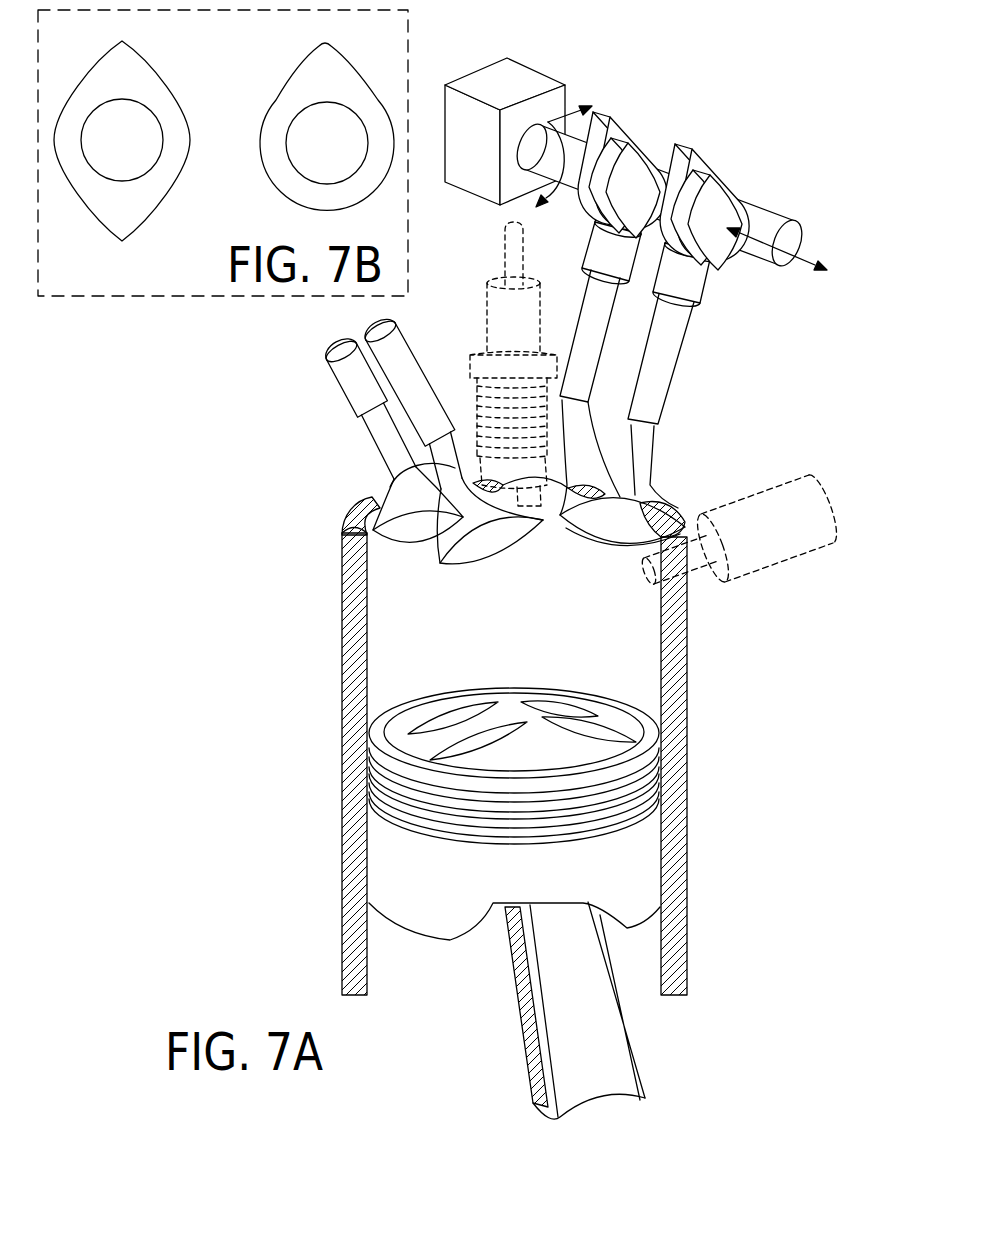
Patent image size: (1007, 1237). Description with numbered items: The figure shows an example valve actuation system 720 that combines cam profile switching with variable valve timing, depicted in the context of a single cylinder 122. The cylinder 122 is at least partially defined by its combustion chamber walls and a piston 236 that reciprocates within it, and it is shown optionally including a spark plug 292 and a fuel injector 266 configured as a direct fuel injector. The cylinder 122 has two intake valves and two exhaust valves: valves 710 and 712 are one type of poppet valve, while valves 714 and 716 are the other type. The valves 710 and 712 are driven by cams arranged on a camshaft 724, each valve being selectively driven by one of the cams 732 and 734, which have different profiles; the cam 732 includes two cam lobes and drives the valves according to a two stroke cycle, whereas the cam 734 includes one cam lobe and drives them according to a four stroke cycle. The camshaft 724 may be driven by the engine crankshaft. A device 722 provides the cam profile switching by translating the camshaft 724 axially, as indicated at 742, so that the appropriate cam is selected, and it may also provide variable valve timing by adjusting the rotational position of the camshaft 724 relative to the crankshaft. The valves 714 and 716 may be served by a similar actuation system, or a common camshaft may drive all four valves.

In FIG. 7A, the cylinder 122 is at (527, 640).
In FIG. 7A, the piston 236 is at (383, 868).
In FIG. 7A, the fuel injector 266 is at (833, 528).
In FIG. 7A, the spark plug 292 is at (538, 280).
In FIG. 7A, the valve 710 is at (670, 343).
In FIG. 7A, the valve 712 is at (595, 333).
In FIG. 7A, the valve 714 is at (392, 485).
In FIG. 7A, the valve 716 is at (378, 430).
In FIG. 7A, the valve actuation system 720 is at (636, 163).
In FIG. 7A, the device 722 is at (530, 78).
In FIG. 7A, the camshaft 724 is at (752, 217).
In FIG. 7B, the cam 732 is at (153, 87).
In FIG. 7A, the cam 732 is at (630, 153).
In FIG. 7B, the cam 734 is at (345, 72).
In FIG. 7A, the cam 734 is at (612, 130).
In FIG. 7B, the translation of the camshaft 742 is at (138, 148).
In FIG. 7A, the translation of the camshaft 742 is at (797, 282).